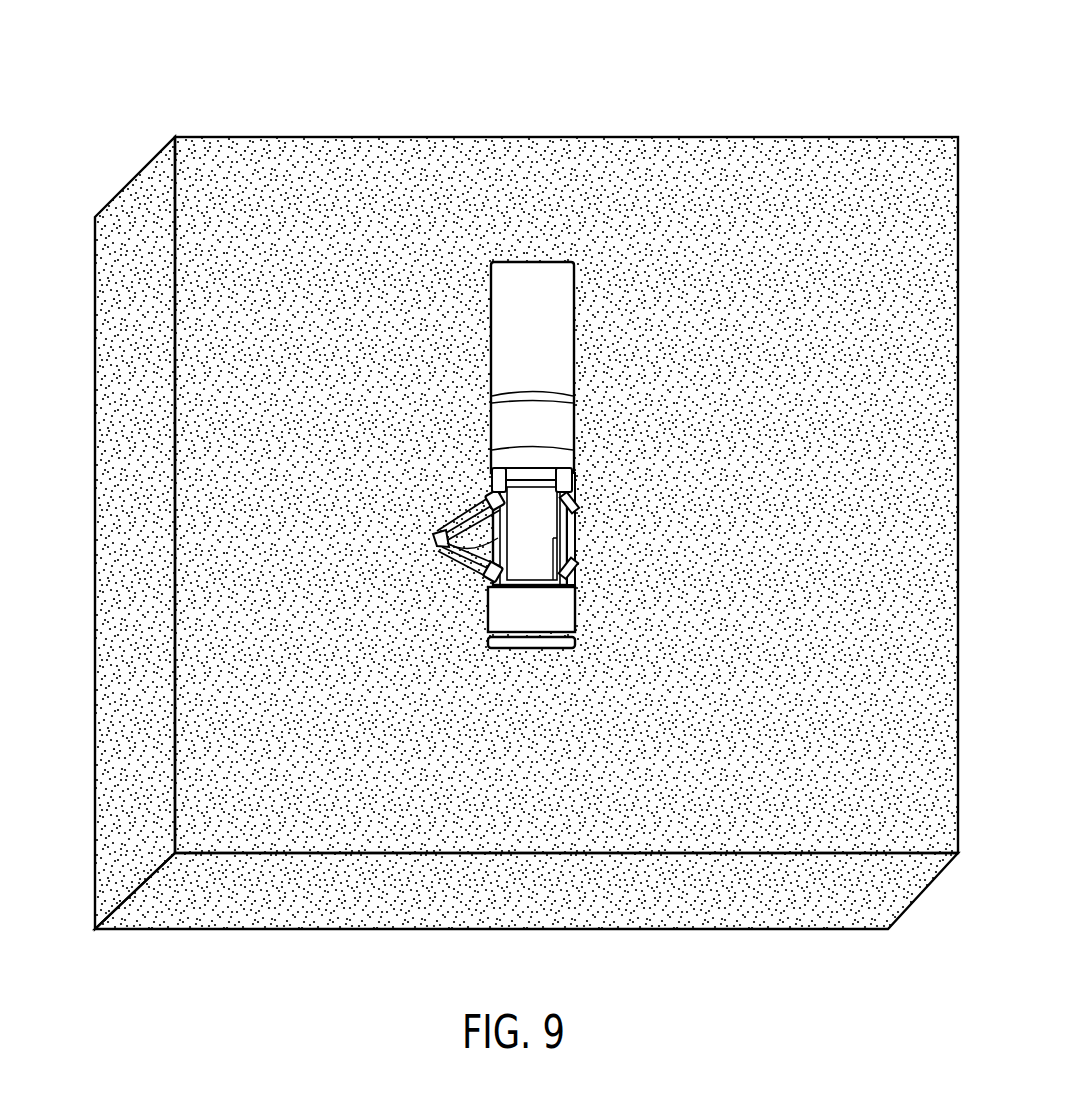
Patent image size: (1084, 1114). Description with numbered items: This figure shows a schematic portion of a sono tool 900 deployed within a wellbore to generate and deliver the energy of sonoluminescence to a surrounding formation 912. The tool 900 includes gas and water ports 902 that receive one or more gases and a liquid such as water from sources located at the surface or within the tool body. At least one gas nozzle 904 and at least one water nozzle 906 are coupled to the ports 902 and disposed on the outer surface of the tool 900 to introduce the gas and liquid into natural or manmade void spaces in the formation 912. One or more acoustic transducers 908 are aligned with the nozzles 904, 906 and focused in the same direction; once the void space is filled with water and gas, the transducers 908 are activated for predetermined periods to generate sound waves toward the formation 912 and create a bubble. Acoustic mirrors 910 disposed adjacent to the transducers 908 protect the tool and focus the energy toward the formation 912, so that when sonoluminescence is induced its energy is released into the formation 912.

The tool 900 is at (228, 78).
The gas and water ports 902 is at (568, 473).
The gas nozzle 904 is at (578, 503).
The water nozzle 906 is at (577, 572).
The acoustic transducers 908 is at (486, 496).
The acoustic mirrors 910 is at (440, 539).
The formation 912 is at (107, 768).